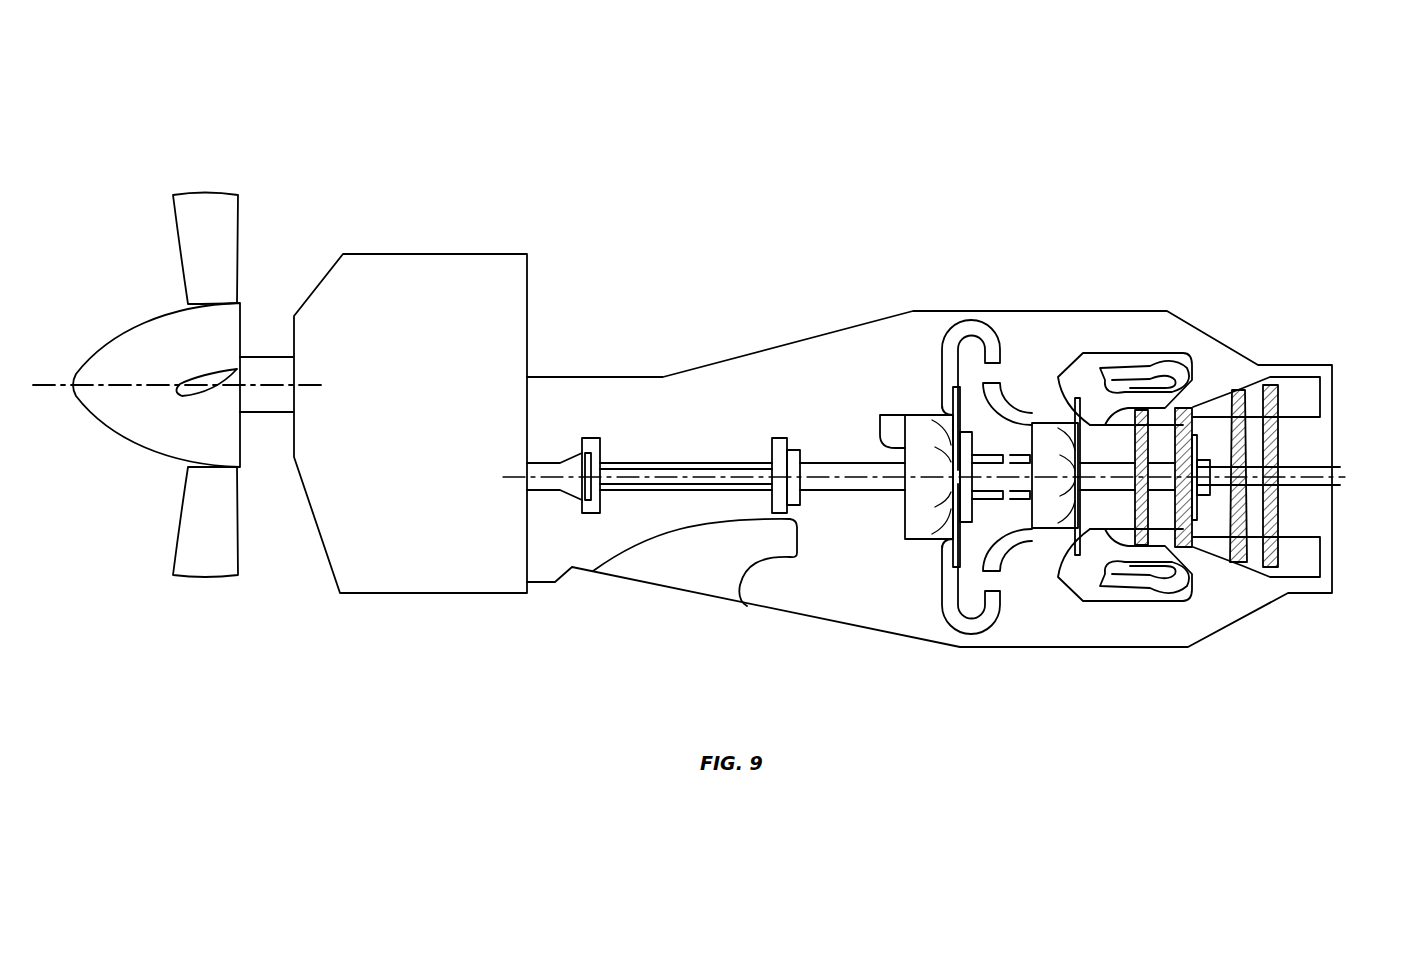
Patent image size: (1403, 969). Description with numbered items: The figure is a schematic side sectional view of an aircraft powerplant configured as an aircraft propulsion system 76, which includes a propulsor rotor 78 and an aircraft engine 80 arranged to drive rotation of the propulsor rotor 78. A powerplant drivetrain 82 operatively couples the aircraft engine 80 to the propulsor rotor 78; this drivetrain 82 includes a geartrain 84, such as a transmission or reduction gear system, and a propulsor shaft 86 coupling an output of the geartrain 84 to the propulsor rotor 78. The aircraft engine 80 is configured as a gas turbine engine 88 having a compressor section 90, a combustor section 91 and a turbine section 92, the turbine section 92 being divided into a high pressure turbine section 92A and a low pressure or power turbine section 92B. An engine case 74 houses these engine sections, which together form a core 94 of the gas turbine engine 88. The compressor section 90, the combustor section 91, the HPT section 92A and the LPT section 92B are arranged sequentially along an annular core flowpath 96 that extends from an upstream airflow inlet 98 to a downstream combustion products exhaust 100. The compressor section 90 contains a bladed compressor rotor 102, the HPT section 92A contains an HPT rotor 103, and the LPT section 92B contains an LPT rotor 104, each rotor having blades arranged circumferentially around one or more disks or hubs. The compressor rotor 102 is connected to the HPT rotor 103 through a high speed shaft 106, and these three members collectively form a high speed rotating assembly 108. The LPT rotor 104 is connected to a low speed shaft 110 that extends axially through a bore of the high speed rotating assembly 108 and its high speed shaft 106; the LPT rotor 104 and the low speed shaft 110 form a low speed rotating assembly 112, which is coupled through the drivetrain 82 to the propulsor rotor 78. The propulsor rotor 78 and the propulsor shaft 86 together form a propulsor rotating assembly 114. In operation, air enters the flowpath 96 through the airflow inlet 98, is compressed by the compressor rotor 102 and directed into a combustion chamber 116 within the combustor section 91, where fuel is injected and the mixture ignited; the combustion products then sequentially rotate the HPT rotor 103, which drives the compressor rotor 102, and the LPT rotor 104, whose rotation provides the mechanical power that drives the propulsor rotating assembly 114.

The engine case 74 is at (868, 322).
The aircraft propulsion system 76 is at (127, 94).
The propulsor rotor 78 is at (231, 182).
The aircraft engine 80 is at (1104, 235).
The powerplant drivetrain 82 is at (481, 240).
The geartrain 84 is at (445, 434).
The propulsor shaft 86 is at (277, 357).
The gas turbine engine 88 is at (1125, 477).
The compressor section 90 is at (918, 379).
The combustor section 91 is at (1197, 391).
The turbine section 92 is at (1352, 245).
The high pressure turbine (HPT) section 92A is at (1235, 388).
The low pressure turbine (LPT) section 92B is at (1292, 362).
The core 94 is at (1104, 296).
The core flowpath 96 is at (720, 564).
The airflow inlet 98 is at (662, 590).
The combustion products exhaust 100 is at (1338, 560).
The compressor rotor 102 is at (922, 540).
The HPT rotor 103 is at (1142, 548).
The LPT rotor 104 is at (1240, 565).
The high speed shaft 106 is at (1030, 535).
The high speed rotating assembly 108 is at (1117, 519).
The low speed shaft 110 is at (840, 492).
The low speed rotating assembly 112 is at (882, 533).
The propulsor rotating assembly 114 is at (274, 437).
The combustion chamber 116 is at (1105, 373).